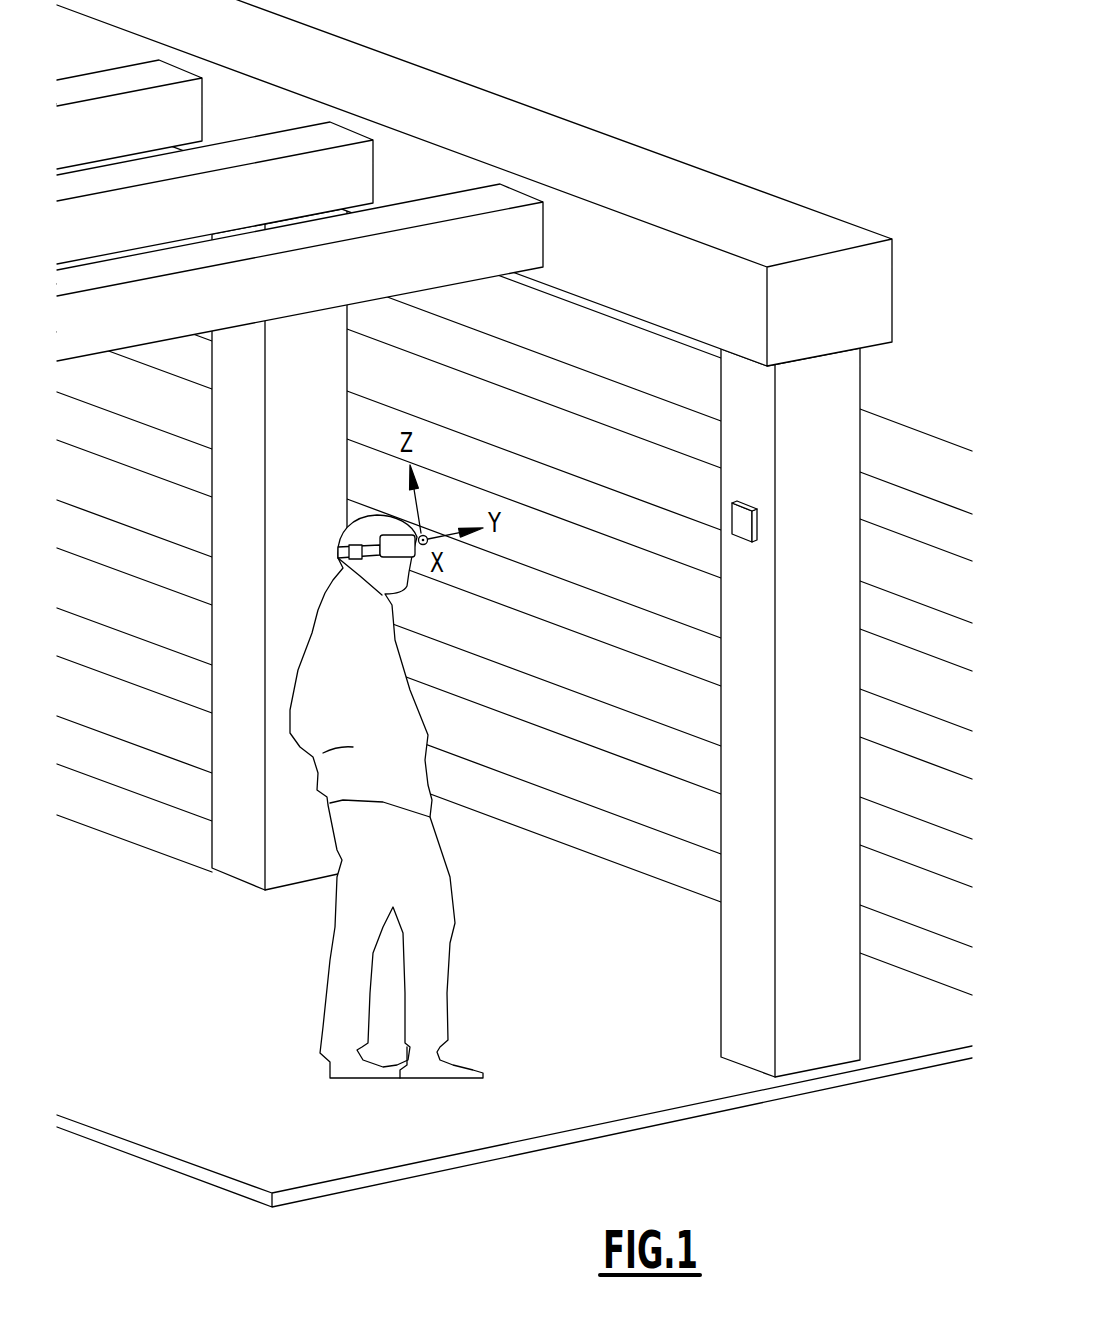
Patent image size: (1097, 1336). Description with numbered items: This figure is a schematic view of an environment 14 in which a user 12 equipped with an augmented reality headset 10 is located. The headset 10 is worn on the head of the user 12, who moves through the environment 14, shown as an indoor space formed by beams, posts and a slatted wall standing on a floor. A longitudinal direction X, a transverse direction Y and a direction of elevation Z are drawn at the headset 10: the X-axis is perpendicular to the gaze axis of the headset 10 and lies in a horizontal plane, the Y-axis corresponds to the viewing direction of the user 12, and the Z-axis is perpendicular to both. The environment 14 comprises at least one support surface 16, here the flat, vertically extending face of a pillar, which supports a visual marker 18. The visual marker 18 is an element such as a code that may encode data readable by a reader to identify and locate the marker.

The augmented reality headset 10 is at (402, 535).
The user 12 is at (323, 763).
The environment 14 is at (246, 1000).
The support surface 16 is at (737, 577).
The visual marker 18 is at (742, 520).